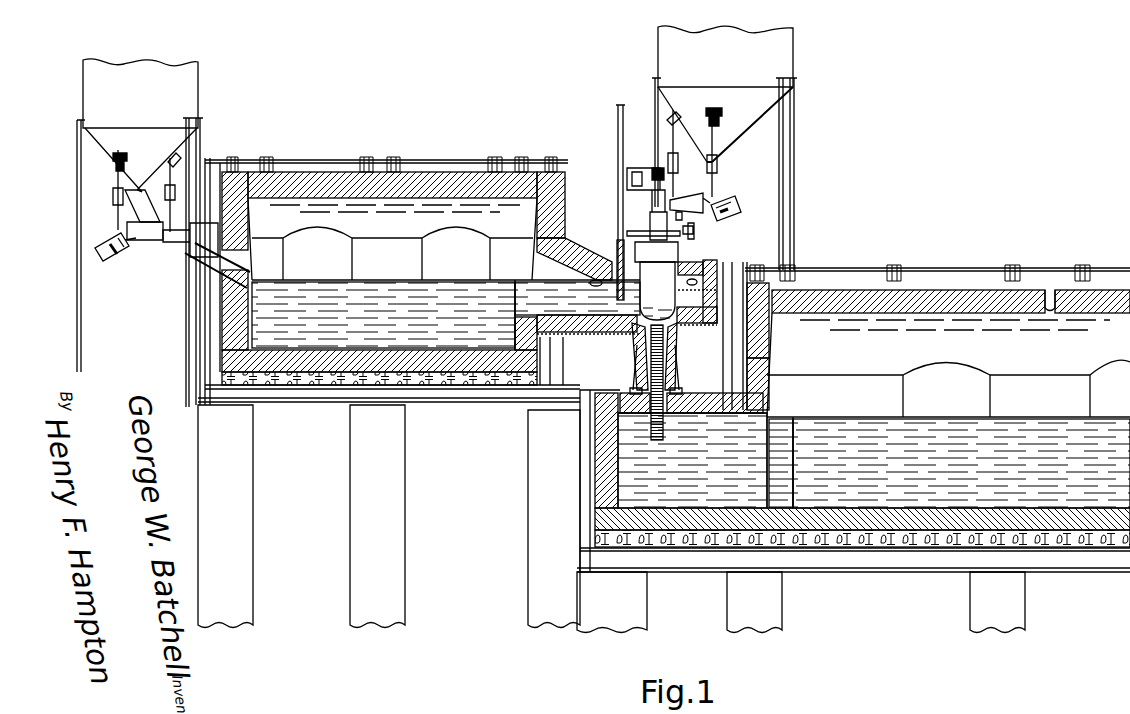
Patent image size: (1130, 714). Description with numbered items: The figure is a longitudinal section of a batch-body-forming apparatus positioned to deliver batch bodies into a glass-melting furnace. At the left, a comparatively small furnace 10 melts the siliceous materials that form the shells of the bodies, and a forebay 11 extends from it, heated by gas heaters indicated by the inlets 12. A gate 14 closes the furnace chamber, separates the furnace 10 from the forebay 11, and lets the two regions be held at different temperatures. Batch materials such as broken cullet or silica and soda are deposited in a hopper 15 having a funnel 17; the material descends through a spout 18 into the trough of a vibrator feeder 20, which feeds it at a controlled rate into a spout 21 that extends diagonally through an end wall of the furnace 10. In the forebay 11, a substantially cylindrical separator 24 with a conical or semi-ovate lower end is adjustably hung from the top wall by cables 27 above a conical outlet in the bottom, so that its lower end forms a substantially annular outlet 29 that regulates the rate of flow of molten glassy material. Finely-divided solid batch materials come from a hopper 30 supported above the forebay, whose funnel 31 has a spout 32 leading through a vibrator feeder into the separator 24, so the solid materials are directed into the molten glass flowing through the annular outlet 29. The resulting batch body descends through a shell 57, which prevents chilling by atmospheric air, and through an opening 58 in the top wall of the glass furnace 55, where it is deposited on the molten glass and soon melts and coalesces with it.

The furnace 10 is at (437, 190).
The forebay 11 is at (707, 270).
The inlets 12 is at (594, 280).
The gate 14 is at (620, 252).
The hopper 15 is at (163, 108).
The funnel 17 is at (118, 142).
The spout 18 is at (140, 207).
The vibrator feeder 20 is at (156, 230).
The spout 21 is at (208, 248).
The separator 24 is at (658, 263).
The cables 27 is at (688, 233).
The annular outlet 29 is at (674, 330).
The hopper 30 is at (755, 65).
The funnel 31 is at (722, 136).
The spout 32 is at (702, 189).
The glass furnace 55 is at (845, 330).
The shell 57 is at (676, 374).
The opening 58 is at (664, 408).